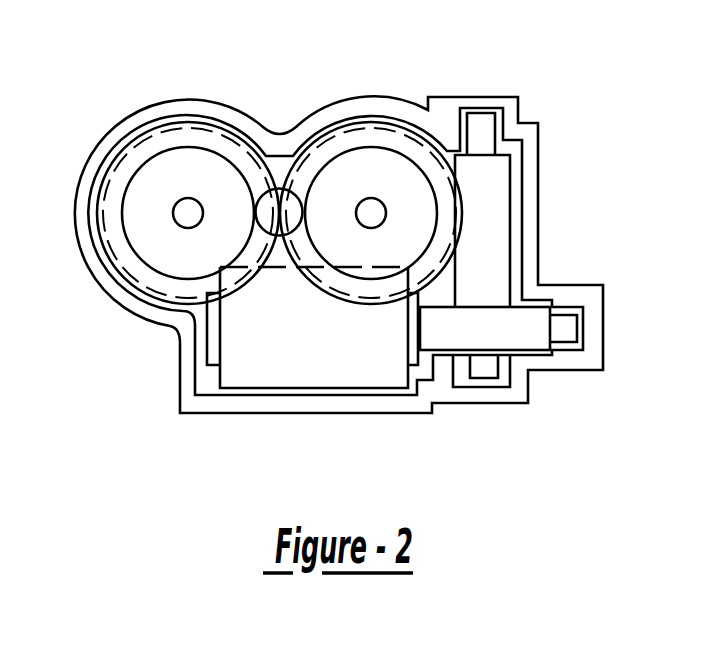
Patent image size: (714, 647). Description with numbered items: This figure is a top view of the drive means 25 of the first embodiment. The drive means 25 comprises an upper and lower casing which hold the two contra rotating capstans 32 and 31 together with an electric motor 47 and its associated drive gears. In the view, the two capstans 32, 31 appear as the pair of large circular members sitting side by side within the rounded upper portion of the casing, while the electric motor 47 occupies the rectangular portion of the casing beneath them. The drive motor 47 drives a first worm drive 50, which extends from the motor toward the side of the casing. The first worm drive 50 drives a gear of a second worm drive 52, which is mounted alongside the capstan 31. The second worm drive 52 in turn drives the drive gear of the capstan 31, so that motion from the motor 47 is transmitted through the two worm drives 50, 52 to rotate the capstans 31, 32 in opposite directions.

The drive means 25 is at (108, 384).
The capstan 31 is at (375, 133).
The capstan 32 is at (192, 137).
The electric motor 47 is at (370, 367).
The first worm drive 50 is at (530, 335).
The second worm drive 52 is at (480, 175).